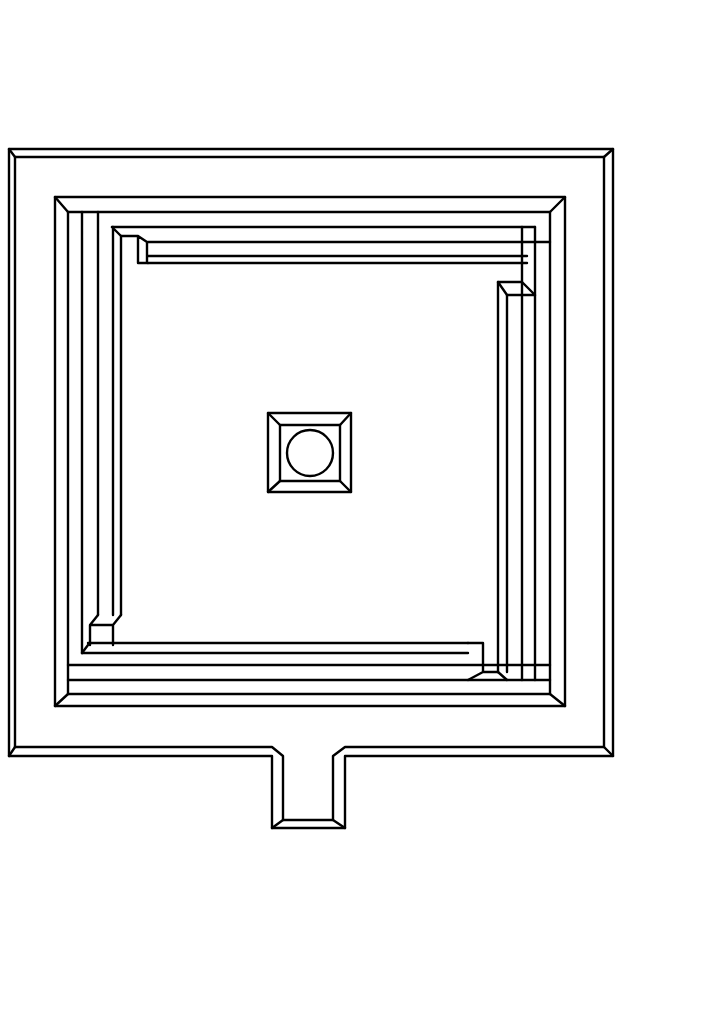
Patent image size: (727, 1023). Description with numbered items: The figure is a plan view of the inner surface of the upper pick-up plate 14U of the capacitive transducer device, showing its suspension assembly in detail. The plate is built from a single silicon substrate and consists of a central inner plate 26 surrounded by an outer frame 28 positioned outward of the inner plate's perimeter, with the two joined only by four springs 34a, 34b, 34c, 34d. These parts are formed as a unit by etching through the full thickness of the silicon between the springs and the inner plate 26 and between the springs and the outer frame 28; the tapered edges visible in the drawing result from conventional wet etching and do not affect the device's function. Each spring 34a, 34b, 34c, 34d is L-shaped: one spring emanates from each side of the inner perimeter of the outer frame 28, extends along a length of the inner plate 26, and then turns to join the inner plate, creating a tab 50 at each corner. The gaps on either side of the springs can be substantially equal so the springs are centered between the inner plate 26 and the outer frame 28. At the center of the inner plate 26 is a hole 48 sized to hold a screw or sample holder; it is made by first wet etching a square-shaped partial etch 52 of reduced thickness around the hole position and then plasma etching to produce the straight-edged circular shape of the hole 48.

The upper pick-up plate 14U is at (150, 103).
The outer frame 28 is at (441, 742).
The inner plate 26 is at (214, 458).
The spring 34a is at (527, 466).
The spring 34b is at (298, 672).
The spring 34c is at (88, 376).
The spring 34d is at (290, 229).
The tab 50 is at (138, 263).
The partial etch 52 is at (322, 412).
The hole 48 is at (296, 463).